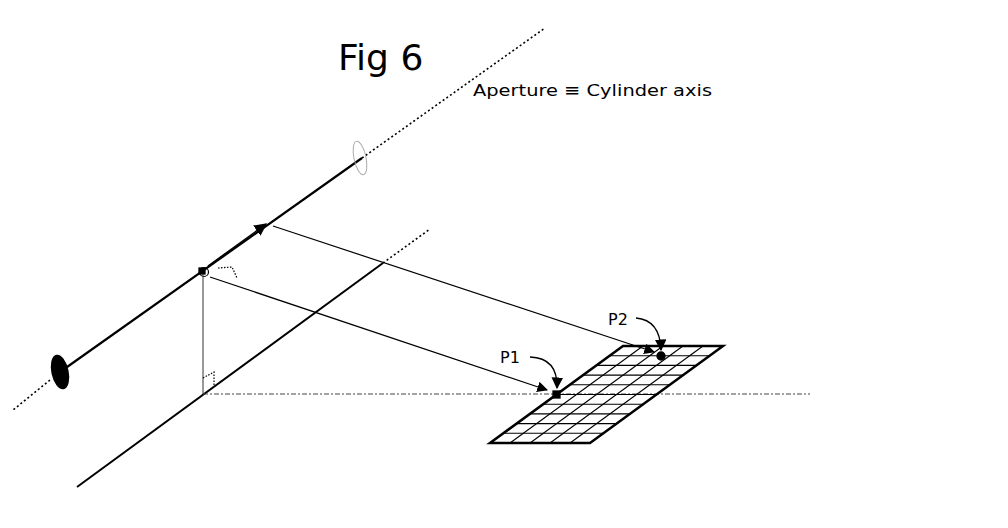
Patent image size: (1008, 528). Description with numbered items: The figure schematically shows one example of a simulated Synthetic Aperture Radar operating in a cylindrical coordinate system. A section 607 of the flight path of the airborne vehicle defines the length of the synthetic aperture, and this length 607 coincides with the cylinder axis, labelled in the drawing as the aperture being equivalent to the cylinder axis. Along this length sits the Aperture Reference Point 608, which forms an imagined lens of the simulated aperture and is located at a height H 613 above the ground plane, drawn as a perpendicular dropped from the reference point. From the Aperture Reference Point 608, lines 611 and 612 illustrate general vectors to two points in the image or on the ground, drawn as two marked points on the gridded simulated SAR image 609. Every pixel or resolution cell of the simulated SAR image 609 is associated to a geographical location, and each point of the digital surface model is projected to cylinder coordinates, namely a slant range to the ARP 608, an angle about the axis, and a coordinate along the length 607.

The length of the flight path 607 is at (160, 298).
The Aperture Reference Point 608 is at (200, 266).
The simulated SAR image 609 is at (500, 442).
The line 611 is at (474, 363).
The line 612 is at (540, 313).
The height H 613 is at (202, 352).